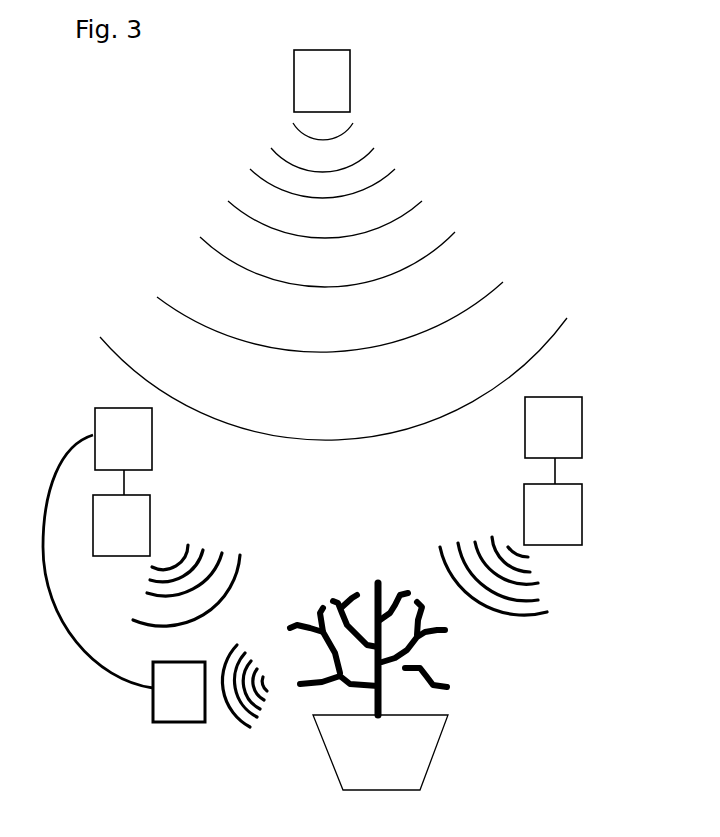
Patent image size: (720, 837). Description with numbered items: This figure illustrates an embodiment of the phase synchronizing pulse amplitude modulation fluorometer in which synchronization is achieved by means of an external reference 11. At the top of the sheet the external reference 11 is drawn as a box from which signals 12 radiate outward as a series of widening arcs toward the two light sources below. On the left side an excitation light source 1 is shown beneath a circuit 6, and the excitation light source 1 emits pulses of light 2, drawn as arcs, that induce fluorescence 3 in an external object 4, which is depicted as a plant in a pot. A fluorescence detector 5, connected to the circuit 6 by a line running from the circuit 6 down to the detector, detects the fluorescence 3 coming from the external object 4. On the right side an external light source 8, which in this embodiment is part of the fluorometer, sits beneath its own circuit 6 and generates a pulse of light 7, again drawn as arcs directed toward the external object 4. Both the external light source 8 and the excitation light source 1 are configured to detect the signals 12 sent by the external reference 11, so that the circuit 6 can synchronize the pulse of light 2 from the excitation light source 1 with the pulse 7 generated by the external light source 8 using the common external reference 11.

The excitation light source 1 is at (121, 525).
The light 2 is at (146, 606).
The fluorescence 3 is at (237, 717).
The external object 4 is at (369, 686).
The fluorescence detector 5 is at (179, 692).
The circuit 6 is at (338, 433).
The pulse of light 7 is at (537, 583).
The external light source 8 is at (553, 514).
The external reference 11 is at (322, 81).
The signals 12 is at (158, 293).